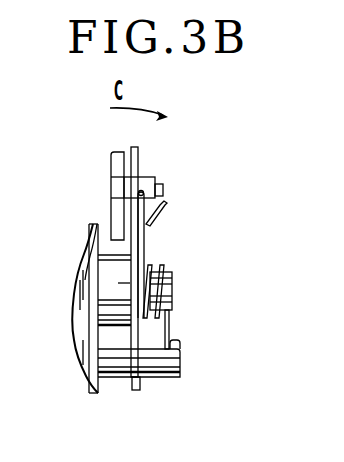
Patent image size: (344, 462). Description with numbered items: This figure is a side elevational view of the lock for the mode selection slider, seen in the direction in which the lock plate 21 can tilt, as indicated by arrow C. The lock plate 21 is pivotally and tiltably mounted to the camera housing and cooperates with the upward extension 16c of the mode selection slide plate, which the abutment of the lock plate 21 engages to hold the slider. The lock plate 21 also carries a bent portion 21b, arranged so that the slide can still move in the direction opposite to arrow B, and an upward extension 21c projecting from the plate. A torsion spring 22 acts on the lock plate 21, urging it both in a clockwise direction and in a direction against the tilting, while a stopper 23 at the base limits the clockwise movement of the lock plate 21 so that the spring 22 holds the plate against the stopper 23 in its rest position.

The upward extension 16c is at (157, 180).
The lock plate 21 is at (135, 163).
The bent portion 21b is at (158, 210).
The upward extension 21c is at (146, 198).
The torsion spring 22 is at (146, 248).
The stopper 23 is at (182, 360).